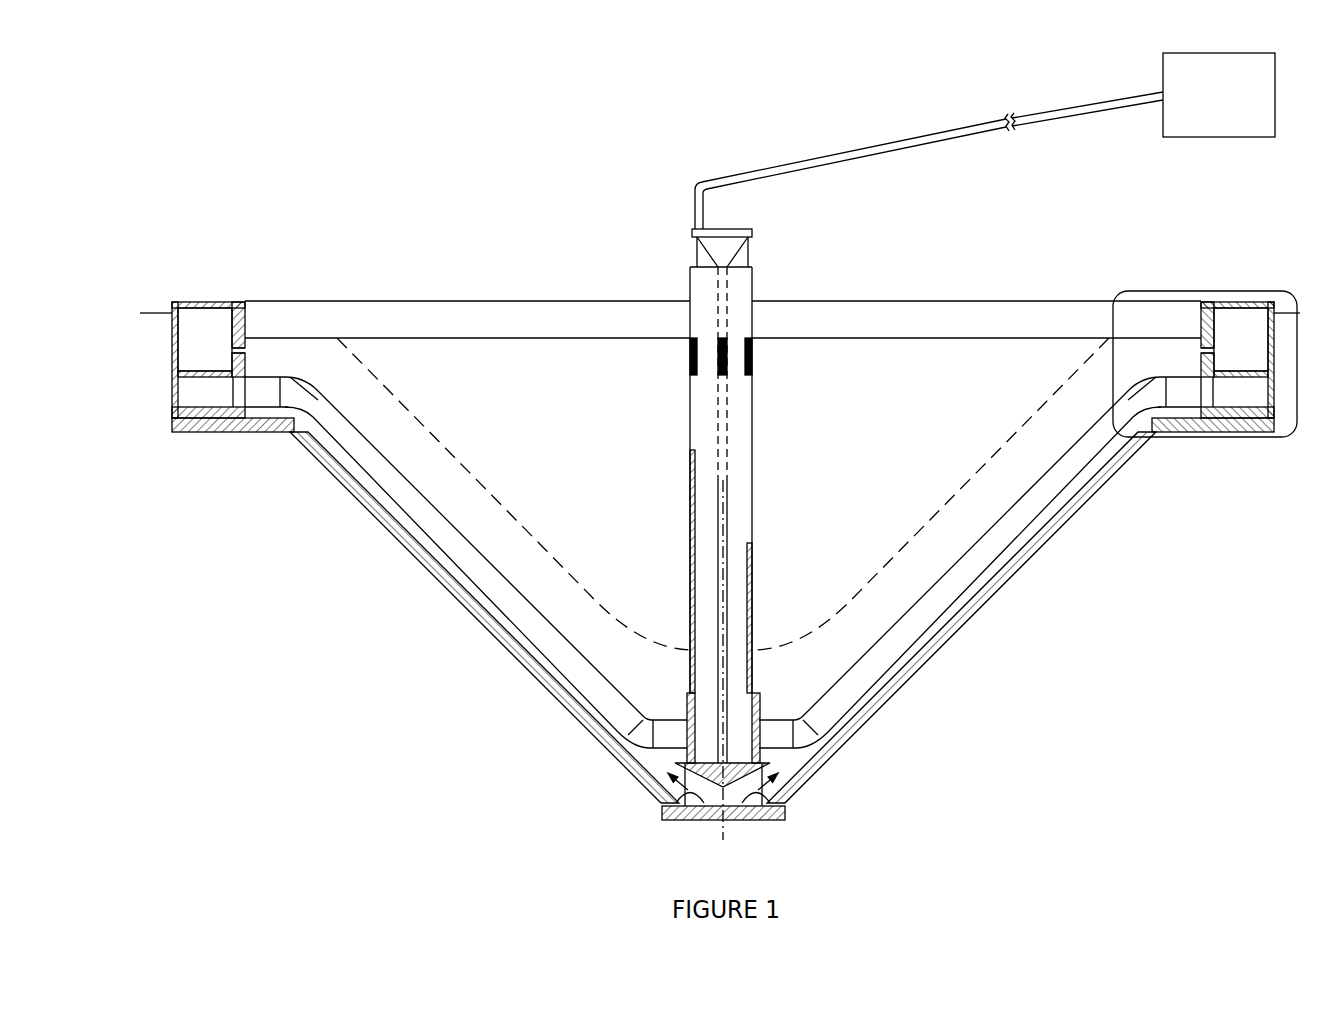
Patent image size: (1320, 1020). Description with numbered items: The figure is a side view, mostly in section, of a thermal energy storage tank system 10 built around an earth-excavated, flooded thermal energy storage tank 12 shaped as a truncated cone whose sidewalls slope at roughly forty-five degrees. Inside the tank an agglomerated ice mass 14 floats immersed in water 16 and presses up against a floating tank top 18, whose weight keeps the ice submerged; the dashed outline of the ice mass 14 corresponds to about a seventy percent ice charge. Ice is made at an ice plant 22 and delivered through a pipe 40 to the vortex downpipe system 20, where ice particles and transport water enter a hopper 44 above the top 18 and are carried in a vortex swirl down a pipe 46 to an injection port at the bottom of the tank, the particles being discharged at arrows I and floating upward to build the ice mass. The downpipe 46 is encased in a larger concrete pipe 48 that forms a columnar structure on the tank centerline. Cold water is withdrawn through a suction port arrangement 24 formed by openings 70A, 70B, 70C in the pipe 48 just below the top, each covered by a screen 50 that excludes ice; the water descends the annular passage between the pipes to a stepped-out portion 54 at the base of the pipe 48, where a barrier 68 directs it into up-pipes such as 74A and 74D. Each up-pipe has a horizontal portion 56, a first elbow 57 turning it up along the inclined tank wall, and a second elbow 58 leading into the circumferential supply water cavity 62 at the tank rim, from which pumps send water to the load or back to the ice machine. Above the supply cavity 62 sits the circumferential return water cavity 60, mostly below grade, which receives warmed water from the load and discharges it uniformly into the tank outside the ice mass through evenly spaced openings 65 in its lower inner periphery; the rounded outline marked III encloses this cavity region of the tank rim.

The thermal energy storage tank system 10 is at (518, 212).
The thermal energy storage tank 12 is at (1040, 552).
The agglomerated ice mass 14 is at (990, 462).
The water 16 is at (808, 673).
The tank top 18 is at (940, 301).
The vortex downpipe system 20 is at (707, 327).
The ice plant 22 is at (1222, 137).
The suction port arrangement 24 is at (737, 400).
The pipe 40 is at (885, 143).
The hopper 44 is at (703, 248).
The pipe 46 is at (718, 505).
The concrete pipe 48 is at (690, 585).
The screen 50 is at (754, 353).
The stepped-out portion 54 is at (757, 708).
The horizontal portion 56 is at (792, 780).
The elbow 57 is at (822, 766).
The second elbow 58 is at (1153, 393).
The circumferential return water cavity 60 is at (213, 322).
The circumferential supply water cavity 62 is at (207, 393).
The openings 65 is at (247, 352).
The barrier 68 is at (688, 763).
The opening 70A is at (681, 365).
The opening 70B is at (722, 385).
The opening 70C is at (757, 380).
The up-pipe 74A is at (612, 702).
The up-pipe 74D is at (950, 634).
The arrows I is at (666, 804).
The detail III is at (1212, 438).